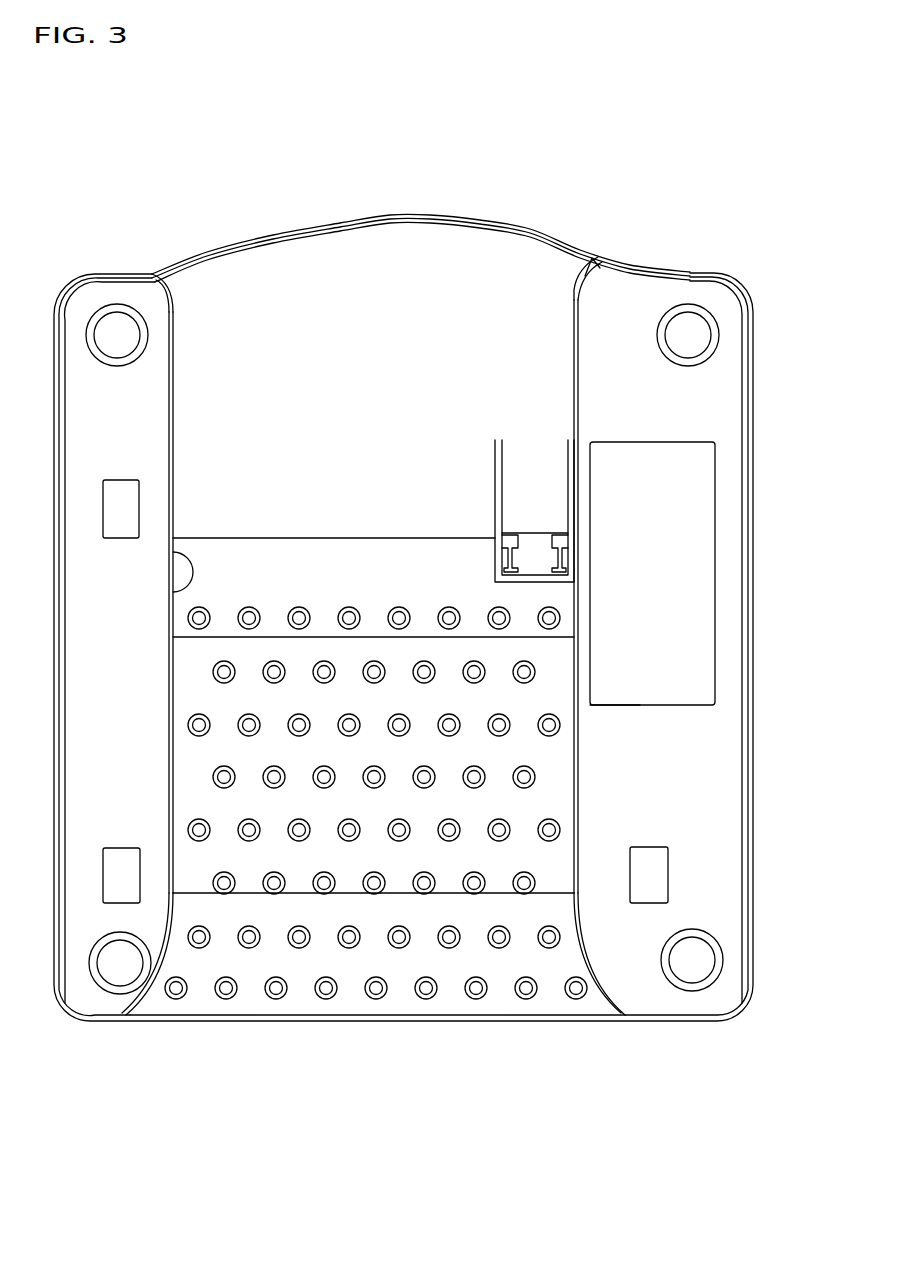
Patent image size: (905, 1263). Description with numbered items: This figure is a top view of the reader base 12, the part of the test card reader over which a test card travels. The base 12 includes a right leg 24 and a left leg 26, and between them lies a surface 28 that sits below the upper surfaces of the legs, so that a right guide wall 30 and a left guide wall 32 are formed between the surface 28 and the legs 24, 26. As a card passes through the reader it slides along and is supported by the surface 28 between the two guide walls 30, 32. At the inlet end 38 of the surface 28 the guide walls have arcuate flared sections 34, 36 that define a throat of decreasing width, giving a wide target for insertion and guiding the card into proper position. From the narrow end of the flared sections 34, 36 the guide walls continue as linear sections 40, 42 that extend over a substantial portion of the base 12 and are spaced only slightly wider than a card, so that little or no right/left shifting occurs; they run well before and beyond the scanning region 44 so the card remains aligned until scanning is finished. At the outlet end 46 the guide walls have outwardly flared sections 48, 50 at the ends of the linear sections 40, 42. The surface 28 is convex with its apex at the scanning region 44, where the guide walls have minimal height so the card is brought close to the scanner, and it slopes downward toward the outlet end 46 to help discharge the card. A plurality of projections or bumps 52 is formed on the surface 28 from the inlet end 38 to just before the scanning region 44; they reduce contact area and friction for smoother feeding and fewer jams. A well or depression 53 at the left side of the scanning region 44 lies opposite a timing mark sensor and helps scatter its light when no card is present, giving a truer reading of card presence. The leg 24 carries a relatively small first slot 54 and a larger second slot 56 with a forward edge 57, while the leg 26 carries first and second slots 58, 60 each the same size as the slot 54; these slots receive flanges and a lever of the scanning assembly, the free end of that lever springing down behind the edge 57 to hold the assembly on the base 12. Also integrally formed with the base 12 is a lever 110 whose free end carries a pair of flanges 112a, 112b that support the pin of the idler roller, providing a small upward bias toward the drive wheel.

The base 12 is at (303, 190).
The right leg 24 is at (731, 793).
The left leg 26 is at (82, 733).
The surface 28 is at (371, 508).
The right guide wall 30 is at (573, 383).
The left guide wall 32 is at (178, 410).
The arcuate flared section 34 is at (601, 994).
The arcuate flared section 36 is at (148, 996).
The inlet end 38 is at (350, 996).
The linear section 40 is at (573, 798).
The linear section 42 is at (175, 783).
The scanning region 44 is at (207, 588).
The outlet end 46 is at (388, 257).
The outwardly flared section 48 is at (585, 262).
The outwardly flared section 50 is at (174, 297).
The projections or bumps 52 is at (376, 832).
The well or depression 53 is at (181, 568).
The first slot 54 is at (660, 884).
The second slot 56 is at (696, 653).
The forward edge 57 is at (613, 704).
The first slot 58 is at (111, 889).
The second slot 60 is at (112, 512).
The lever 110 is at (528, 478).
The flange 112a is at (509, 541).
The flange 112b is at (561, 557).